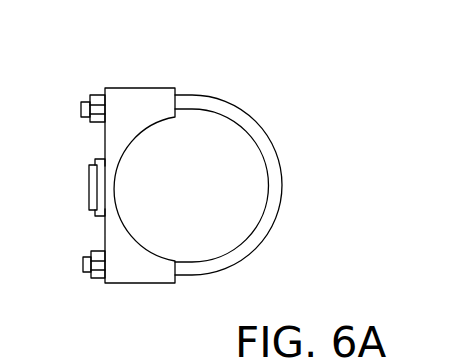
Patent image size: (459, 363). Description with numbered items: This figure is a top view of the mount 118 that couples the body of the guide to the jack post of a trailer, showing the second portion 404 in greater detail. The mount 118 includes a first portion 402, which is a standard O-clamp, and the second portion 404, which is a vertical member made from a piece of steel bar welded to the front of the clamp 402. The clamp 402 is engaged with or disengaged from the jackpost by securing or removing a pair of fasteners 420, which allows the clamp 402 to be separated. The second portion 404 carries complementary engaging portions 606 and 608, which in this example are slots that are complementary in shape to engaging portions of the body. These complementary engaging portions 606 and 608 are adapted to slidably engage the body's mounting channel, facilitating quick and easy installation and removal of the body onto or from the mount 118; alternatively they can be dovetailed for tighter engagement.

The mount 118 is at (146, 88).
The first portion 402 is at (270, 137).
The fasteners 420 is at (98, 94).
The second portion 404 is at (88, 186).
The complementary engaging portion 606 is at (97, 160).
The complementary engaging portion 608 is at (97, 214).